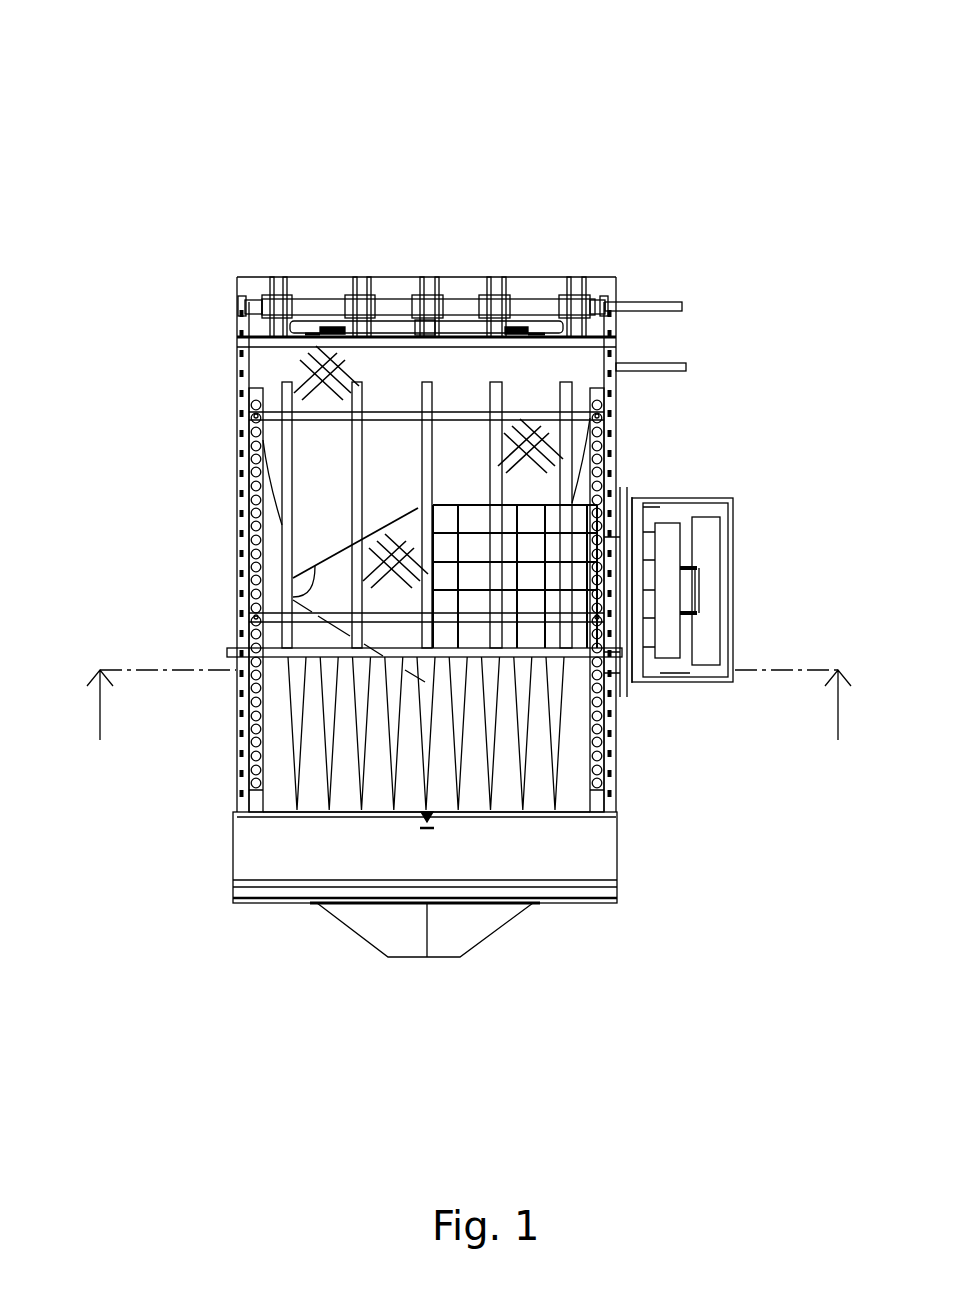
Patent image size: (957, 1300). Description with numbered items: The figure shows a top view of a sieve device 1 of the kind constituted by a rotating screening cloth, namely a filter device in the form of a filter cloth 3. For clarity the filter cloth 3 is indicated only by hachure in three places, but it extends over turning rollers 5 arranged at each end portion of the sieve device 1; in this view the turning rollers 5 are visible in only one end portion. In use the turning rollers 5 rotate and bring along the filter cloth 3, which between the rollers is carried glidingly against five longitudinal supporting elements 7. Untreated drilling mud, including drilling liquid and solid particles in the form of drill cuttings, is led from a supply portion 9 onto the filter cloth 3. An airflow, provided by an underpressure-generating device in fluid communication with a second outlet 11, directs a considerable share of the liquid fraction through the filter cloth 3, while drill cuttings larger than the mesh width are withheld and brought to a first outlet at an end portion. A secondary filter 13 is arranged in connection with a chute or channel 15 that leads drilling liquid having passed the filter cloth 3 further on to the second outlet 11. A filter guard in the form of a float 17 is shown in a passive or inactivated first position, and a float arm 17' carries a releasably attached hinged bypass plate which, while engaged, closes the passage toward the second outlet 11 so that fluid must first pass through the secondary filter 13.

The sieve device 1 is at (168, 170).
The filter cloth 3 is at (305, 277).
The turning rollers 5 is at (588, 286).
The longitudinal supporting elements 7 is at (438, 394).
The supply portion 9 is at (308, 754).
The second outlet 11 is at (712, 592).
The secondary filter 13 is at (435, 511).
The chute or channel 15 is at (293, 597).
The float 17 is at (734, 645).
The float arm 17' is at (759, 611).